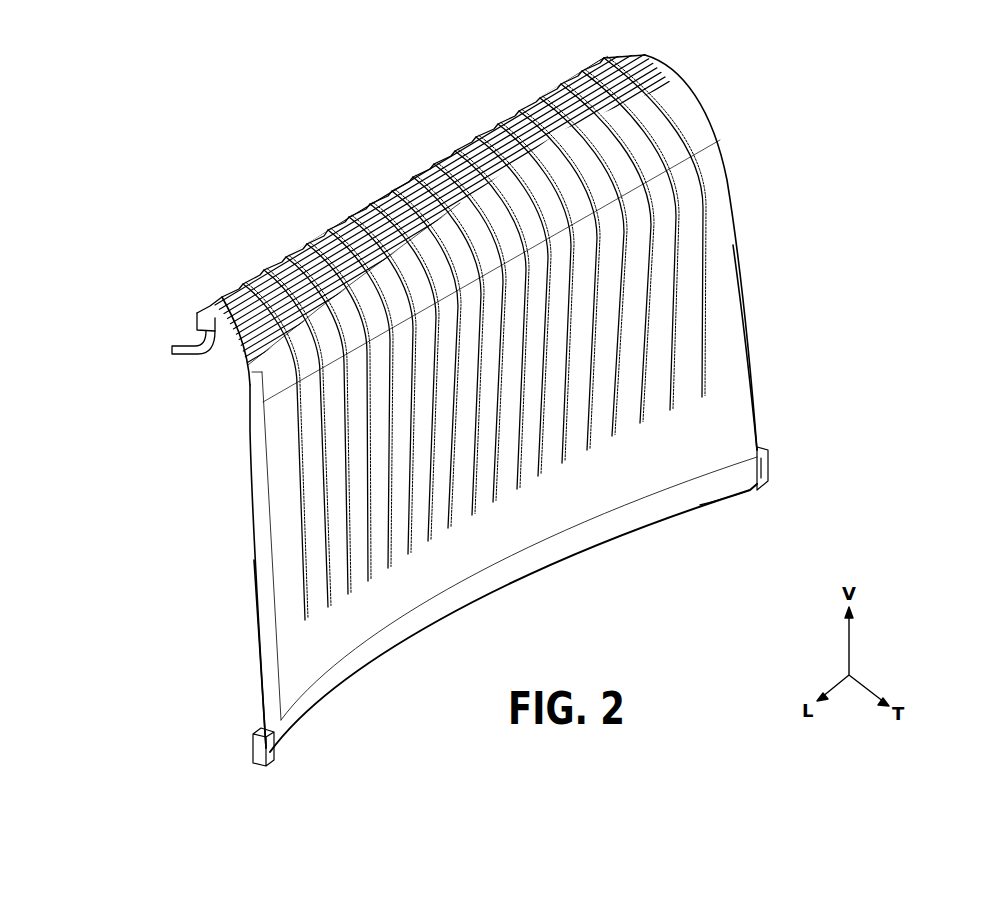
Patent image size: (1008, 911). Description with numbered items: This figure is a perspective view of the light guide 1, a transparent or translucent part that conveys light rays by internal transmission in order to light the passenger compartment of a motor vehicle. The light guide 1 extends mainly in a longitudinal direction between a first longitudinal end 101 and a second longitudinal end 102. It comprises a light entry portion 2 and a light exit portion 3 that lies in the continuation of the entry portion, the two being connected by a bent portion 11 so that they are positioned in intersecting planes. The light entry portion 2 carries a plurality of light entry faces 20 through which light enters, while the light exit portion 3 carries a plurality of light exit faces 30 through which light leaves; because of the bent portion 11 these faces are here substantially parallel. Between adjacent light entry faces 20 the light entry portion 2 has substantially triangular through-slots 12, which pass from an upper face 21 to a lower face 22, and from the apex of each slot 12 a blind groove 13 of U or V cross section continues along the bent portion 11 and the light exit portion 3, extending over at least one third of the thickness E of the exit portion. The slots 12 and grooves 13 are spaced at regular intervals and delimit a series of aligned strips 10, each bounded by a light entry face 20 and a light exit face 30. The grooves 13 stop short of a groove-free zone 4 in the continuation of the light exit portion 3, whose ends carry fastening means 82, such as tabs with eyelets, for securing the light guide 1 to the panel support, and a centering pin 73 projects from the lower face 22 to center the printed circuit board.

The light guide 1 is at (85, 201).
The light entry portion 2 is at (693, 69).
The light exit portion 3 is at (727, 104).
The zone without grooves 4 is at (782, 377).
The strip 10 is at (360, 557).
The bent portion 11 is at (725, 108).
The slot 12 is at (262, 274).
The groove 13 is at (676, 402).
The light entry face 20 is at (205, 308).
The upper face 21 is at (366, 210).
The lower face 22 is at (240, 348).
The light exit face 30 is at (685, 203).
The centering pin 73 is at (185, 347).
The fastening means 82 is at (253, 743).
The longitudinal end 101 is at (265, 633).
The longitudinal end 102 is at (752, 347).
The thickness E is at (253, 462).